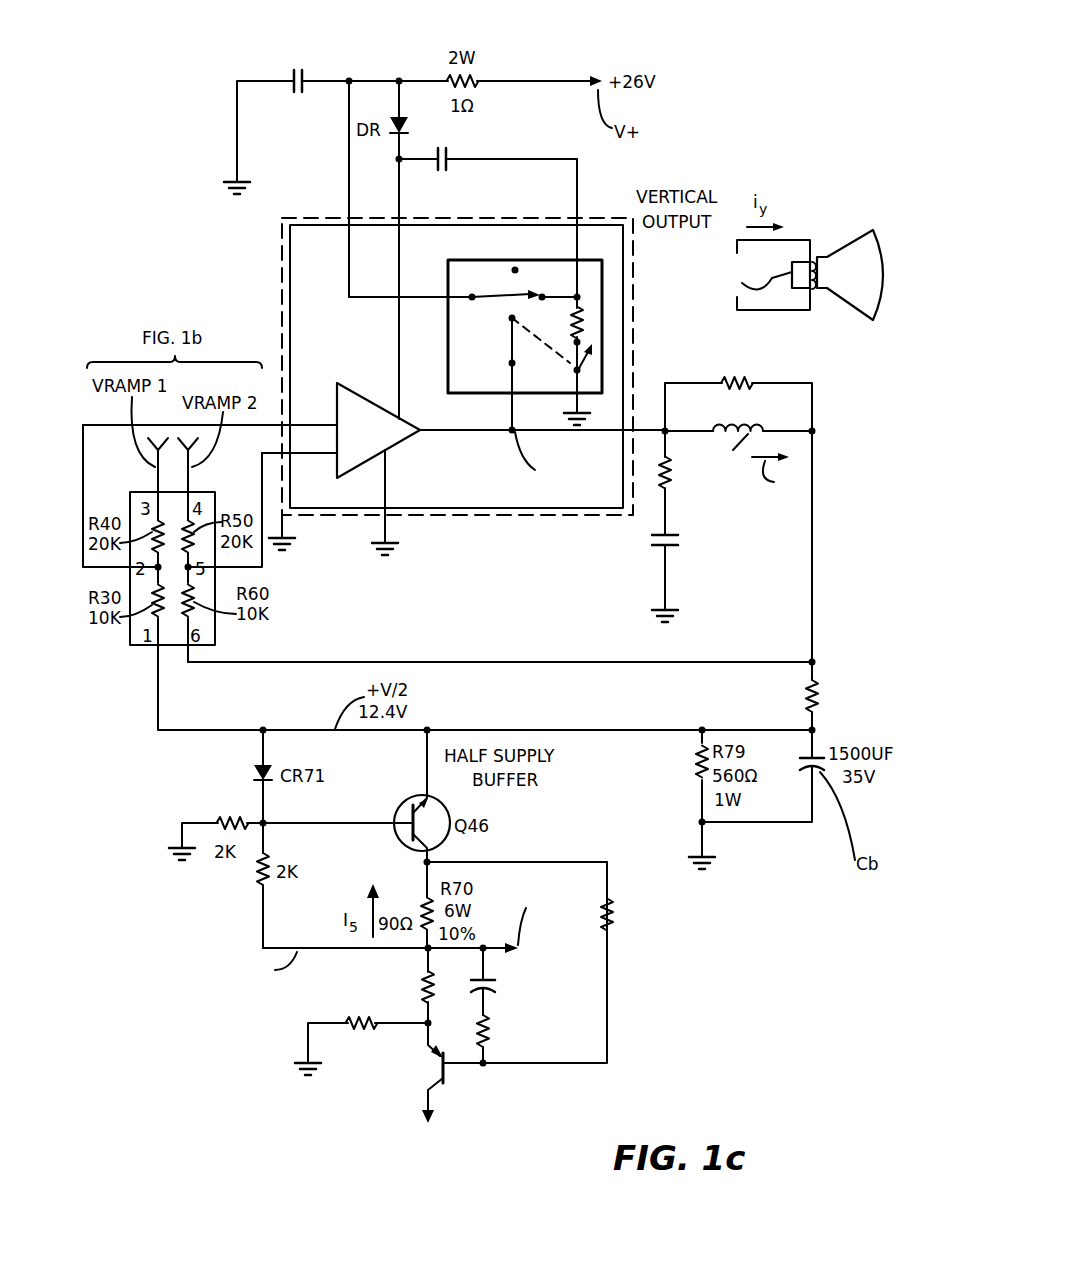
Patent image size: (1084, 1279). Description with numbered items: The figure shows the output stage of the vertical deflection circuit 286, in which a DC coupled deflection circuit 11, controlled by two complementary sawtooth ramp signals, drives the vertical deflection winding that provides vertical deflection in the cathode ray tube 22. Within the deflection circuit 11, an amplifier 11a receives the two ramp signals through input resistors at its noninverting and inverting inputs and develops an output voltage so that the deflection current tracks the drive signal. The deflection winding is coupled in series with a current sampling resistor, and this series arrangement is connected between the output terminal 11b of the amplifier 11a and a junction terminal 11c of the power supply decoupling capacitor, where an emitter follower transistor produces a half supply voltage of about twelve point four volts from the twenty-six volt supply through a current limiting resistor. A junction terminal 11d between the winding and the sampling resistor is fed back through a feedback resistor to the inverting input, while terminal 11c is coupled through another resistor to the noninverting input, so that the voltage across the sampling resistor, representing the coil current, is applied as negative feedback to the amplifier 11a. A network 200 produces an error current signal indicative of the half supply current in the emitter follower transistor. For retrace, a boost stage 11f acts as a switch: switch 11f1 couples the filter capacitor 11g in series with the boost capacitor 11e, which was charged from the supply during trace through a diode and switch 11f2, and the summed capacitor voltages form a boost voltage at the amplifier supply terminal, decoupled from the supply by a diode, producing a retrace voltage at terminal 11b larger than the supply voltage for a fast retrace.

The DC coupled deflection circuit 11 is at (476, 643).
The amplifier 11a is at (362, 468).
The output terminal 11b is at (662, 440).
The junction terminal 11c is at (810, 722).
The junction terminal 11d is at (818, 658).
The boost capacitor 11e is at (446, 152).
The boost stage 11f is at (569, 307).
The switch 11f1 is at (508, 273).
The switch 11f2 is at (587, 360).
The filter capacitor 11g is at (290, 92).
The cathode ray tube 22 is at (887, 287).
The network 200 is at (596, 1039).
The vertical deflection circuit 286 is at (648, 36).